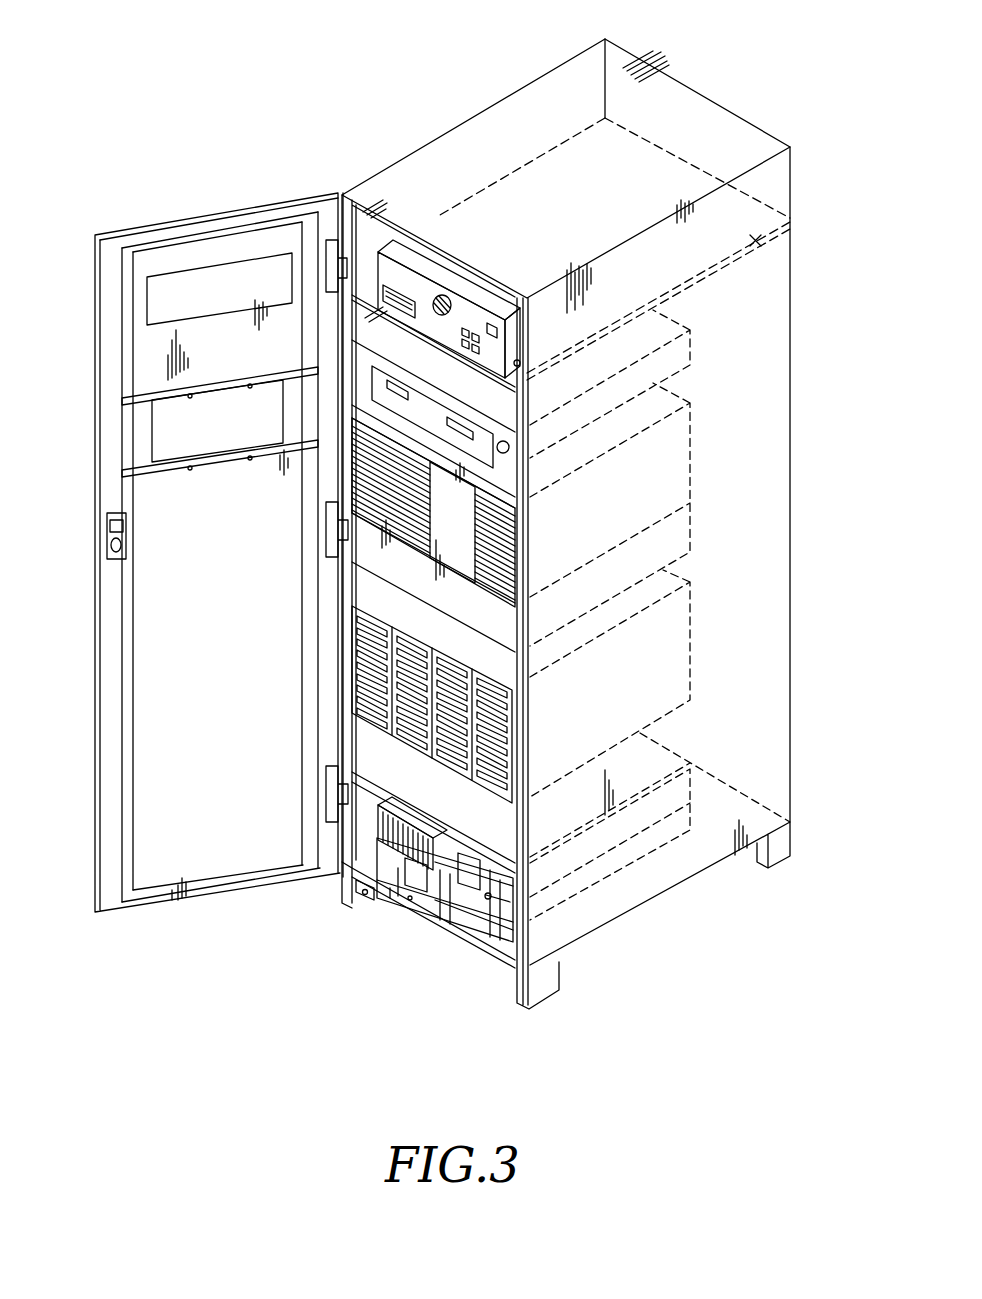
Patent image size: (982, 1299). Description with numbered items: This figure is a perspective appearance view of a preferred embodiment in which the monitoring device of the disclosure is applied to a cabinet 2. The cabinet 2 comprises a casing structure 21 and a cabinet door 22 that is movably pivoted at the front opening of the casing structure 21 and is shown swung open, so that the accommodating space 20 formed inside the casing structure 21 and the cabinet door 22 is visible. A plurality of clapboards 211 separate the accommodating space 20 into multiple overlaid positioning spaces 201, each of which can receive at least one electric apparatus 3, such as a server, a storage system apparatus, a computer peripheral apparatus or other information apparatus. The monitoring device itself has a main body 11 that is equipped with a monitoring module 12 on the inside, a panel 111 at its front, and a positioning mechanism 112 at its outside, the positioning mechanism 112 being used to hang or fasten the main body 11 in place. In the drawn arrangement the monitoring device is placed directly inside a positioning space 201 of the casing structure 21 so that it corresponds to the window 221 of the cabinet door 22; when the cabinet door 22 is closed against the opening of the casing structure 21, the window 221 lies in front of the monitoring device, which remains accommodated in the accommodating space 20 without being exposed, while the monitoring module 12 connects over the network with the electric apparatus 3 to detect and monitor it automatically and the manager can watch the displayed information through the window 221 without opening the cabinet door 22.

The cabinet 2 is at (700, 55).
The positioning space 201 is at (697, 128).
The casing structure 21 is at (777, 323).
The clapboard 211 is at (765, 239).
The cabinet door 22 is at (253, 237).
The window 221 is at (190, 268).
The main body 11 is at (428, 262).
The panel 111 is at (396, 268).
The positioning mechanism 112 is at (507, 355).
The monitoring module 12 is at (371, 270).
The accommodating space 20 is at (478, 816).
The electric apparatus 3 is at (495, 917).